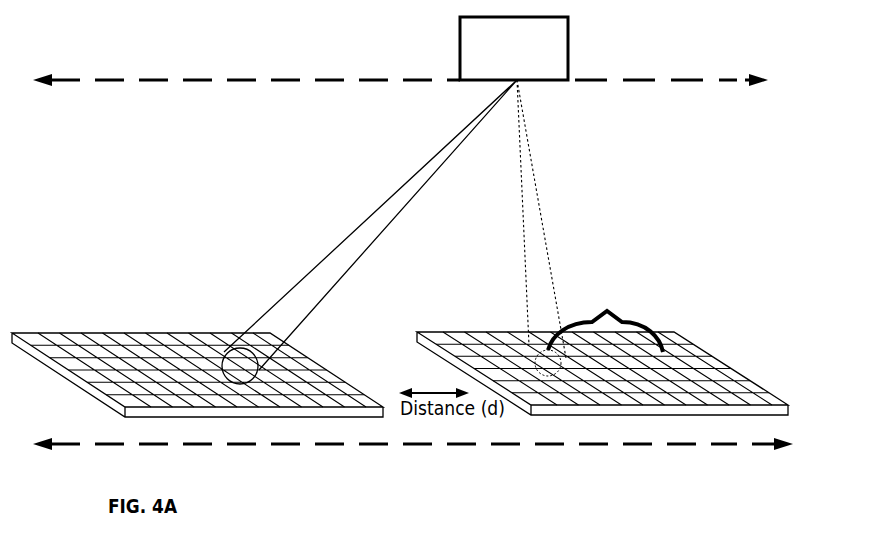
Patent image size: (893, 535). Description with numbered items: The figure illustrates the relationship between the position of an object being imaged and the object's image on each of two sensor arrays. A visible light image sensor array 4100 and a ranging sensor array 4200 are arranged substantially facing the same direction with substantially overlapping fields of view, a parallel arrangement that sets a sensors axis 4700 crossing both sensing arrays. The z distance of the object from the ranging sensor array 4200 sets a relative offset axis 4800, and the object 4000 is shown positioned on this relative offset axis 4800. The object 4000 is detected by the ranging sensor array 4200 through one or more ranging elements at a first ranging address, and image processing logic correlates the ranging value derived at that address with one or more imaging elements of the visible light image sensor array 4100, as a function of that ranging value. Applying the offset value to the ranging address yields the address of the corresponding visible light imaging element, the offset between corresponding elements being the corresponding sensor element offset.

The object 4000 is at (514, 48).
The visible light image sensor array 4100 is at (50, 333).
The ranging sensor array 4200 is at (768, 391).
The sensors axis 4700 is at (413, 470).
The relative offset axis 4800 is at (400, 105).